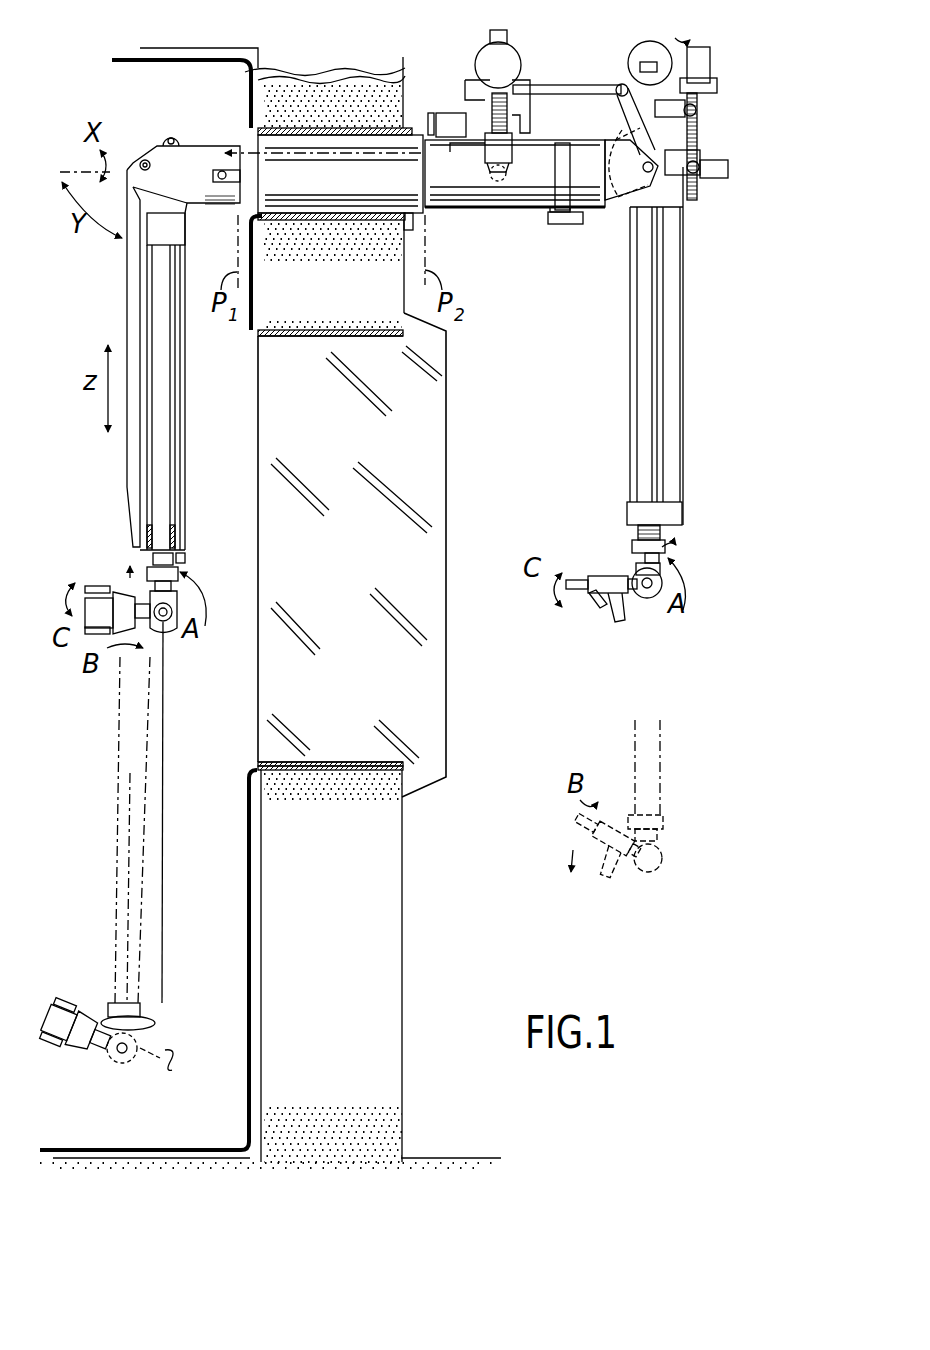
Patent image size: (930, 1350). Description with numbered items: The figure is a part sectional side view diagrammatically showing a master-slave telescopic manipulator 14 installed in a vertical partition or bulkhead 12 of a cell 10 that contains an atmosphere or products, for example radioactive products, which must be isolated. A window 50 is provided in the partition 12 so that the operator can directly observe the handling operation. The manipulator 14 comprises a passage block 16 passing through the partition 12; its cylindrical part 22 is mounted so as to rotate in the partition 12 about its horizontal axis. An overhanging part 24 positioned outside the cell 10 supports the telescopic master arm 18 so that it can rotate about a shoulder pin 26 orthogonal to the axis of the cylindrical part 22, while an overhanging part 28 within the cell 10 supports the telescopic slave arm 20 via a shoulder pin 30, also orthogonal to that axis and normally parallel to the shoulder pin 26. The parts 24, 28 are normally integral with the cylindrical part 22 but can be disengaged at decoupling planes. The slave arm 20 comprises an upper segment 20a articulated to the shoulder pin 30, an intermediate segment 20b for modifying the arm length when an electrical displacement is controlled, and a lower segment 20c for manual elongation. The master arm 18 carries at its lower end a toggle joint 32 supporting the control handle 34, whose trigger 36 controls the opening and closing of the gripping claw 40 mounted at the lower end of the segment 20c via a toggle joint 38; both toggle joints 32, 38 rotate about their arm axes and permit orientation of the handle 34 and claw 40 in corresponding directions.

The cell 10 is at (92, 80).
The partition 12 is at (270, 608).
The master-slave telescopic manipulator 14 is at (573, 12).
The passage block 16 is at (300, 252).
The telescopic master arm 18 is at (625, 396).
The telescopic slave arm 20 is at (152, 360).
The upper segment 20a is at (138, 484).
The intermediate segment 20b is at (178, 450).
The lower segment 20c is at (170, 508).
The cylindrical part 22 is at (358, 212).
The overhanging part 24 is at (523, 192).
The shoulder pin 26 is at (613, 214).
The overhanging part 28 is at (200, 162).
The shoulder pin 30 is at (142, 162).
The toggle joint 32 is at (649, 592).
The control handle 34 is at (606, 616).
The trigger 36 is at (590, 606).
The toggle joint 38 is at (163, 621).
The gripping claw 40 is at (98, 638).
The window 50 is at (352, 555).